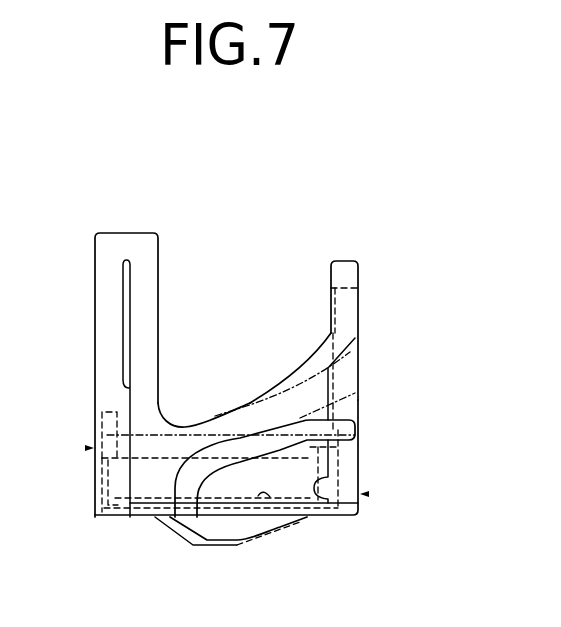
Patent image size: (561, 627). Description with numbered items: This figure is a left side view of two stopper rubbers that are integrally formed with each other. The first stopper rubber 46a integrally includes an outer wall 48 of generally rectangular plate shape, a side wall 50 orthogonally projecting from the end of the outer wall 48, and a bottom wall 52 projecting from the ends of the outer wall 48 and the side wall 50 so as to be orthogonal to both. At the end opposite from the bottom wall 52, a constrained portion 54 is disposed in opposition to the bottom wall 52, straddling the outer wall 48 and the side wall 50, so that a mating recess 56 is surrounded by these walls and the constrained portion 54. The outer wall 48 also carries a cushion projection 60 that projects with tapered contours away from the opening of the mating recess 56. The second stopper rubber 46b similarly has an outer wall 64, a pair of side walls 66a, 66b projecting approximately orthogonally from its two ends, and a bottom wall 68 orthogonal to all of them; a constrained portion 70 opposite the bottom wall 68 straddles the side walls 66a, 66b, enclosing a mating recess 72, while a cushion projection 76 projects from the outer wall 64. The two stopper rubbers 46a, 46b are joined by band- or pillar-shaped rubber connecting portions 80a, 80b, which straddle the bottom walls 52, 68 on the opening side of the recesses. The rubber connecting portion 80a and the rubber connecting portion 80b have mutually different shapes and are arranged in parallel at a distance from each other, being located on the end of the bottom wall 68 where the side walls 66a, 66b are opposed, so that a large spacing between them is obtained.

The stopper rubber 46a is at (366, 494).
The stopper rubber 46b is at (88, 448).
The outer wall 48 is at (155, 518).
The side wall 50 is at (343, 390).
The bottom wall 52 is at (295, 372).
The constrained portion 54 is at (262, 444).
The mating recess 56 is at (316, 484).
The cushion projection 60 is at (240, 523).
The outer wall 64 is at (127, 512).
The side wall 66a is at (105, 488).
The side wall 66b is at (352, 476).
The bottom wall 68 is at (190, 418).
The constrained portion 70 is at (158, 446).
The mating recess 72 is at (266, 495).
The cushion projection 76 is at (186, 527).
The rubber connecting portion 80a is at (128, 248).
The rubber connecting portion 80b is at (343, 272).